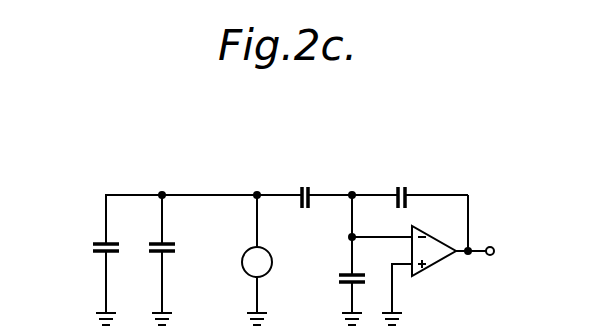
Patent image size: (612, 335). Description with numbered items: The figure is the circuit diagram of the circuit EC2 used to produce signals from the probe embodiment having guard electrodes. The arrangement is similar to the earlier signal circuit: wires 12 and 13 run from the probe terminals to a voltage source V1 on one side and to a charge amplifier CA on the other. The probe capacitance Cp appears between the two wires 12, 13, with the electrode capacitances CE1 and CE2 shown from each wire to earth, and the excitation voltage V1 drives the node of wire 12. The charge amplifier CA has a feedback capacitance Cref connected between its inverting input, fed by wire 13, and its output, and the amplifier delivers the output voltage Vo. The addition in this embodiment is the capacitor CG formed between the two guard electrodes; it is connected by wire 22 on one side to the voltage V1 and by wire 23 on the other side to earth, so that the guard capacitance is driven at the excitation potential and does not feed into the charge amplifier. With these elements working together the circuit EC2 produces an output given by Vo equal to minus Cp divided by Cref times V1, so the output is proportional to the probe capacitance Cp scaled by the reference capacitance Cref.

The wire 22 is at (106, 205).
The wire 23 is at (106, 290).
The wire 12 is at (277, 193).
The wire 13 is at (335, 193).
The capacitor CG is at (100, 241).
The electrode capacitance CE1 is at (167, 253).
The electrode capacitance CE2 is at (347, 287).
The probe capacitance Cp is at (300, 191).
The feedback capacitance Cref is at (408, 191).
The charge amplifier CA is at (457, 216).
The voltage source V1 is at (252, 263).
The output Vo is at (493, 251).
The circuit EC2 is at (480, 150).